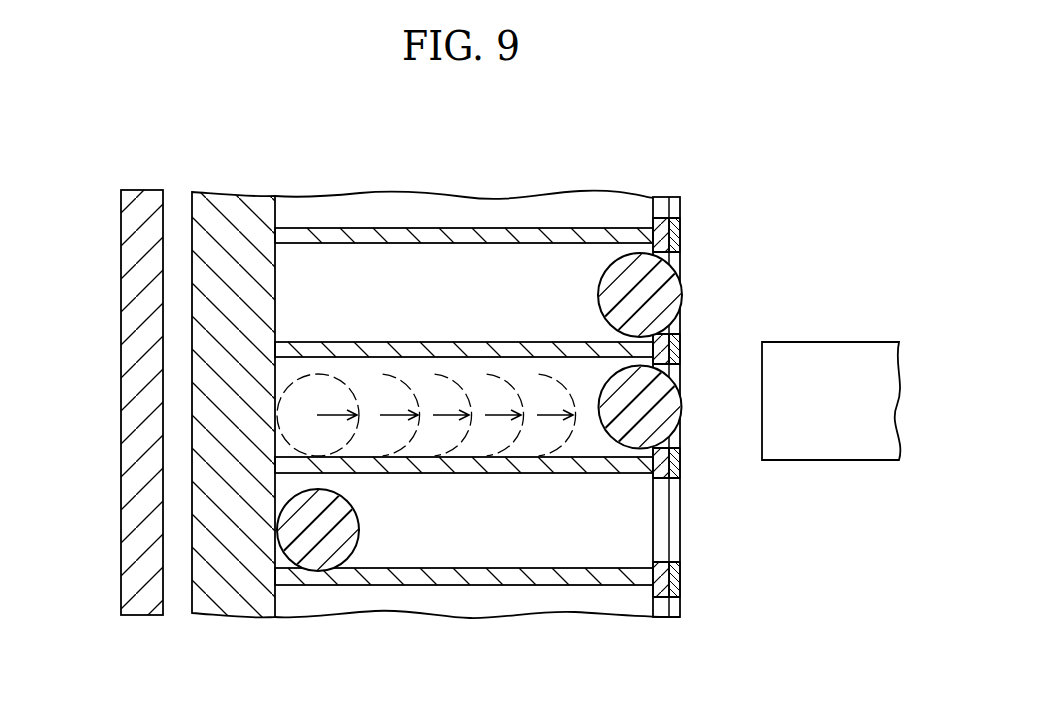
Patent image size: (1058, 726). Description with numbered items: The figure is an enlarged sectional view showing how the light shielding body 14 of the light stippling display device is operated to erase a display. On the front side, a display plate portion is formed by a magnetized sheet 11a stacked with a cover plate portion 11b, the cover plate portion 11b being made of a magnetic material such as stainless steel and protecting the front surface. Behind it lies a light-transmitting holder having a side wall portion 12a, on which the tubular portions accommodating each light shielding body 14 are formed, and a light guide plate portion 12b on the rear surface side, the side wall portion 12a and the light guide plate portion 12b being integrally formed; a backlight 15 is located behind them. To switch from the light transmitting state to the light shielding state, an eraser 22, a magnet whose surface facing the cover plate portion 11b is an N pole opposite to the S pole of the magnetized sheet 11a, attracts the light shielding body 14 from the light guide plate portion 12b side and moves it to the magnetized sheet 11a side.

The magnetized sheet 11a is at (661, 479).
The cover plate portion 11b is at (676, 343).
The side wall portion 12a is at (381, 344).
The light guide plate portion 12b is at (242, 216).
The light shielding body 14 is at (676, 270).
The backlight 15 is at (121, 312).
The eraser (erasing means) 22 is at (836, 342).